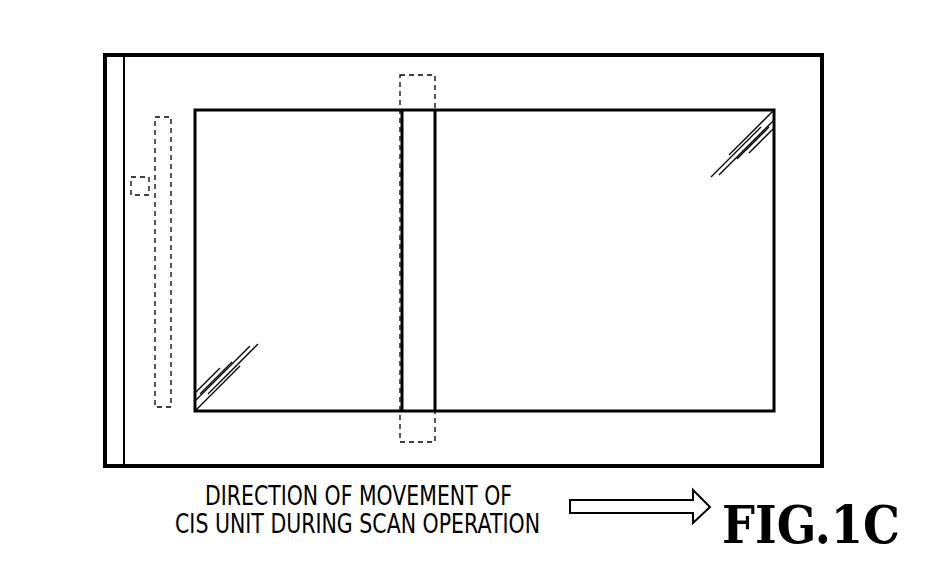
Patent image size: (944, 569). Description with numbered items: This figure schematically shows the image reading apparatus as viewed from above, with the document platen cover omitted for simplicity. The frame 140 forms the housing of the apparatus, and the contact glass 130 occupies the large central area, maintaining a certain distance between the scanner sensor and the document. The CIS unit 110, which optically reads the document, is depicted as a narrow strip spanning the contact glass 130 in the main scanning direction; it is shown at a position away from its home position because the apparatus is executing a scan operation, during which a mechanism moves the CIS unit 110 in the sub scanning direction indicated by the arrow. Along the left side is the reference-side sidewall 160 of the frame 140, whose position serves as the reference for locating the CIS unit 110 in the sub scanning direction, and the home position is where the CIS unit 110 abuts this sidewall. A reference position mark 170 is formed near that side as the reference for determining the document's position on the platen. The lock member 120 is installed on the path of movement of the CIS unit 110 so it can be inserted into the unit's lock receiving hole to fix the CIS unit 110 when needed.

The CIS unit 110 is at (428, 84).
The lock member 120 is at (133, 190).
The contact glass 130 is at (740, 165).
The frame 140 is at (822, 343).
The reference-side sidewall 160 is at (115, 308).
The reference position mark 170 is at (154, 138).